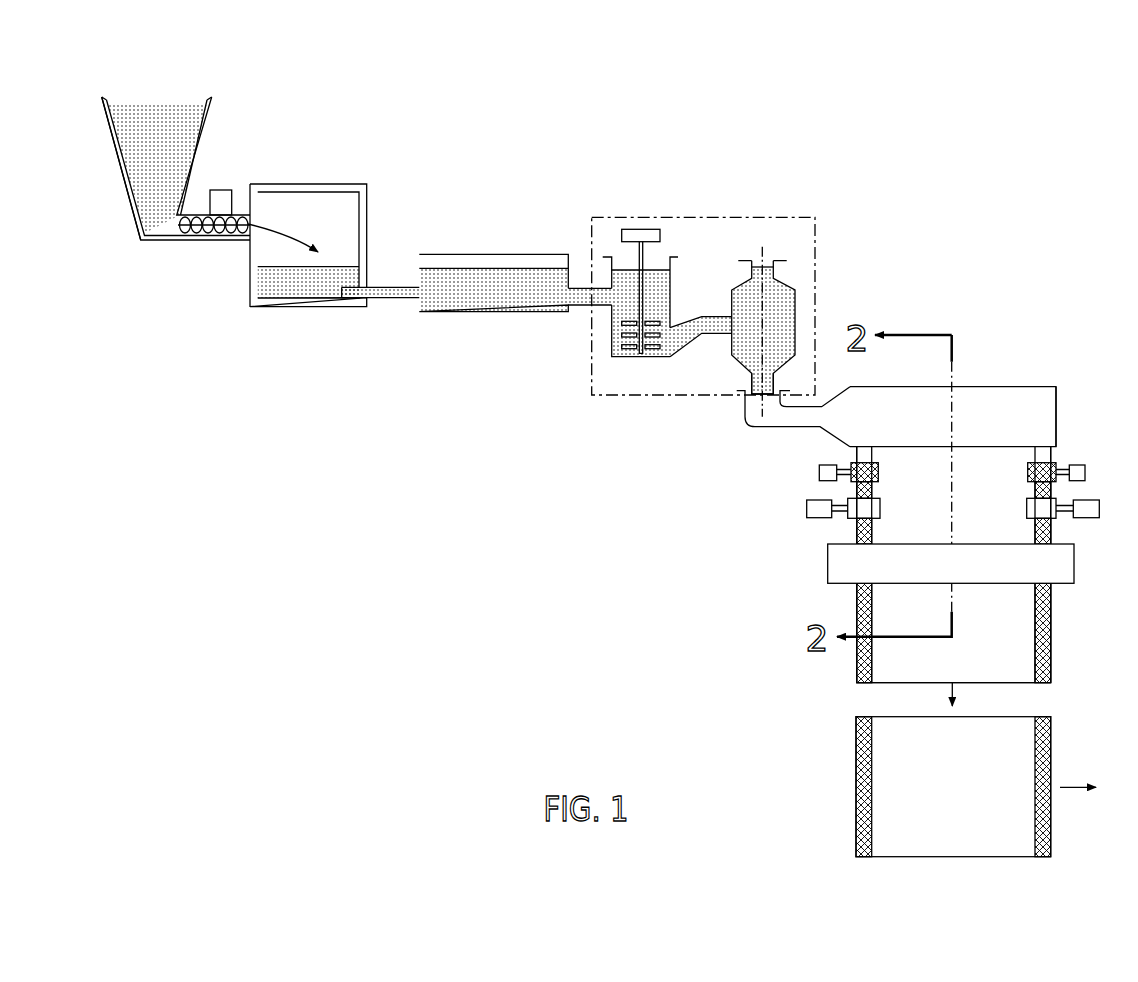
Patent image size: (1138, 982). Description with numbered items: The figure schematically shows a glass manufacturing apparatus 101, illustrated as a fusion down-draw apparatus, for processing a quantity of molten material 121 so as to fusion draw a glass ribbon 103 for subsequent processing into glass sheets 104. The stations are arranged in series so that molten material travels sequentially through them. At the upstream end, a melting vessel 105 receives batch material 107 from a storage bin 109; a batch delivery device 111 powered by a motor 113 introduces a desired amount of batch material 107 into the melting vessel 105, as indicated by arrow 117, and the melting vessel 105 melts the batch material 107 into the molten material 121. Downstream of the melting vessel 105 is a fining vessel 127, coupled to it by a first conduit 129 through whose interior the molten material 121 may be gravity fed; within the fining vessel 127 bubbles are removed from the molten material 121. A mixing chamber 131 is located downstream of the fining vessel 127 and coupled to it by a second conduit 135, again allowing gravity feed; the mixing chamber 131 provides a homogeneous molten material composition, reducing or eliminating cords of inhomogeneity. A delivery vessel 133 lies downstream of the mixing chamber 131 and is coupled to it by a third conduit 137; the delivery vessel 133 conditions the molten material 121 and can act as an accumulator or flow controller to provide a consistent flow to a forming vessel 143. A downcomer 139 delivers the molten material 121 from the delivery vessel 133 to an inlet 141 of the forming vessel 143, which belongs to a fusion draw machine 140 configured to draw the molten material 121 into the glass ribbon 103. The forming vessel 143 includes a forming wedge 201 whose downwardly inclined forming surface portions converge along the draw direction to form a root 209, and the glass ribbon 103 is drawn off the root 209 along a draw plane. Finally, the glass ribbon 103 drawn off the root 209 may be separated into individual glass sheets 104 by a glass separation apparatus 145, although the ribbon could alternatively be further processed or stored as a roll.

The glass manufacturing apparatus 101 is at (780, 190).
The glass ribbon 103 is at (928, 457).
The glass sheets 104 is at (883, 813).
The melting vessel 105 is at (289, 327).
The batch material 107 is at (148, 103).
The storage bin 109 is at (121, 170).
The batch delivery device 111 is at (201, 230).
The motor 113 is at (227, 191).
The arrow 117 is at (277, 226).
The molten material 121 is at (338, 265).
The fining vessel 127 is at (489, 253).
The first conduit 129 is at (395, 285).
The mixing chamber 131 is at (672, 272).
The delivery vessel 133 is at (795, 308).
The second conduit 135 is at (582, 307).
The third conduit 137 is at (693, 315).
The downcomer 139 is at (775, 382).
The fusion draw machine 140 is at (1070, 360).
The inlet 141 is at (743, 403).
The forming vessel 143 is at (990, 386).
The glass separation apparatus 145 is at (1064, 565).
The forming wedge 201 is at (1040, 425).
The root 209 is at (972, 455).